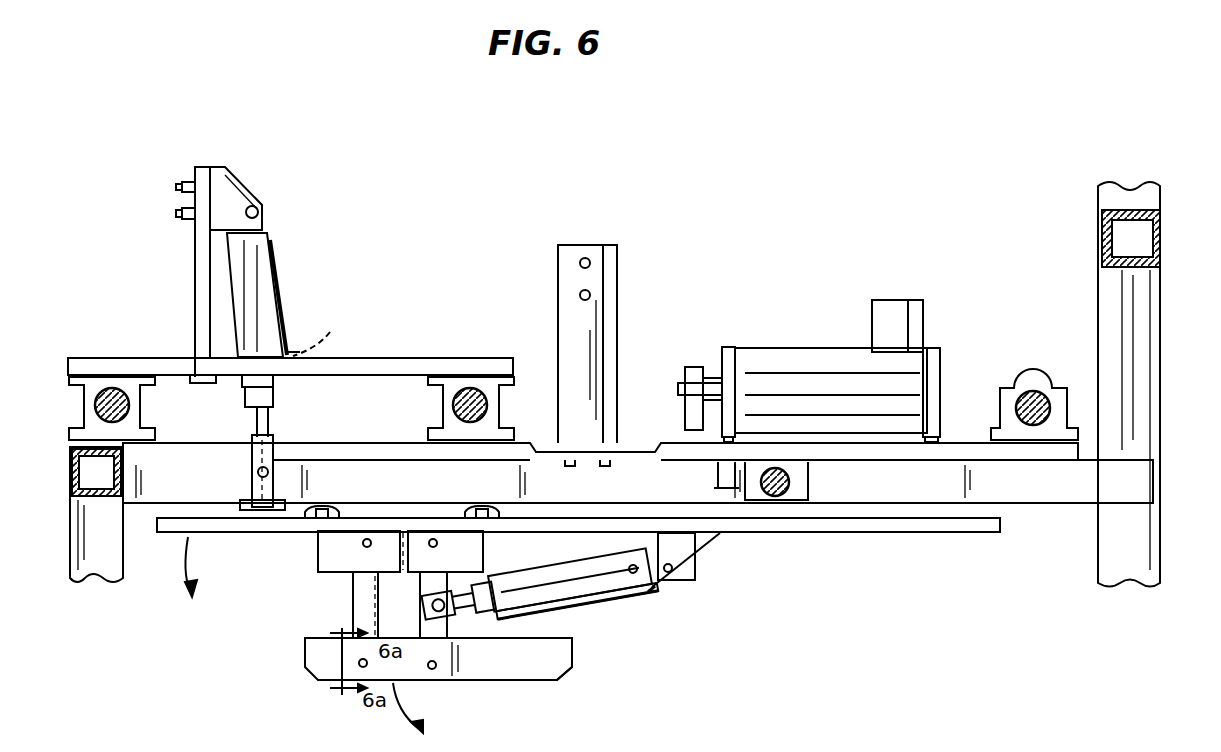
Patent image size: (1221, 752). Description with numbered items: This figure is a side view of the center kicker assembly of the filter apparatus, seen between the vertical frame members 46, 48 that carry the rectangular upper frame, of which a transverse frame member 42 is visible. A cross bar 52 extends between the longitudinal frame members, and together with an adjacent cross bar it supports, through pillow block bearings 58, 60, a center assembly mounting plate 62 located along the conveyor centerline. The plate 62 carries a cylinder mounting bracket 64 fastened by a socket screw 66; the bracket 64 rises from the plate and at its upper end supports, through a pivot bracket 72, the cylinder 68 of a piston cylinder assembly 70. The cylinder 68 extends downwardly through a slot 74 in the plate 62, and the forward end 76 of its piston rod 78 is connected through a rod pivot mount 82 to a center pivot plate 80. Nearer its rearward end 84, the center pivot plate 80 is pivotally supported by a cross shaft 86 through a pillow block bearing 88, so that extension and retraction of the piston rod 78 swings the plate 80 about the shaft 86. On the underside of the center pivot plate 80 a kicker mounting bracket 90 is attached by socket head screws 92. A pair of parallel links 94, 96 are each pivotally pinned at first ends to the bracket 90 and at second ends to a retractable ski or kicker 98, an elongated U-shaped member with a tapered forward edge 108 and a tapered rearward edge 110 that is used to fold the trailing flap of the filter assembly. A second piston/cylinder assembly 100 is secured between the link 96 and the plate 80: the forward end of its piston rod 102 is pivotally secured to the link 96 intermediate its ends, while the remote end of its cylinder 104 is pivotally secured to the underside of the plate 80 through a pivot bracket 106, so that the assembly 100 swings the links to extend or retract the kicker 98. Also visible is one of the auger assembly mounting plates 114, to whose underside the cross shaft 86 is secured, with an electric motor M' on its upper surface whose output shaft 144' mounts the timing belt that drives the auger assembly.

The transverse frame member 42 is at (108, 386).
The vertical frame member 46 is at (113, 547).
The vertical frame member 48 is at (1145, 560).
The cross bar 52 is at (460, 386).
The pillow block bearing 58 is at (130, 378).
The pillow block bearing 60 is at (503, 383).
The center assembly mounting plate 62 is at (378, 362).
The cylinder mounting bracket 64 is at (200, 265).
The socket screw 66 is at (193, 358).
The cylinder 68 is at (271, 262).
The piston cylinder assembly 70 is at (289, 305).
The pivot bracket 72 is at (228, 190).
The slot 74 is at (319, 332).
The forward end of the piston rod 76 is at (270, 472).
The piston rod 78 is at (264, 426).
The center pivot plate 80 is at (190, 524).
The rod pivot mount 82 is at (250, 490).
The rearward end 84 is at (929, 533).
The cross shaft 86 is at (763, 504).
The pillow block bearing 88 is at (803, 480).
The kicker mounting bracket 90 is at (346, 570).
The socket head screws 92 is at (313, 522).
The link 94 is at (352, 612).
The link 96 is at (422, 621).
The retractable ski or kicker 98 is at (570, 579).
The piston/cylinder assembly 100 is at (577, 601).
The piston rod 102 is at (458, 602).
The cylinder 104 is at (632, 598).
The pivot bracket 106 is at (694, 556).
The tapered forward edge 108 is at (306, 678).
The tapered rearward edge 110 is at (572, 676).
The auger assembly mounting plate 114 is at (955, 445).
The output shaft 144' is at (726, 357).
The electric motor M' is at (831, 371).